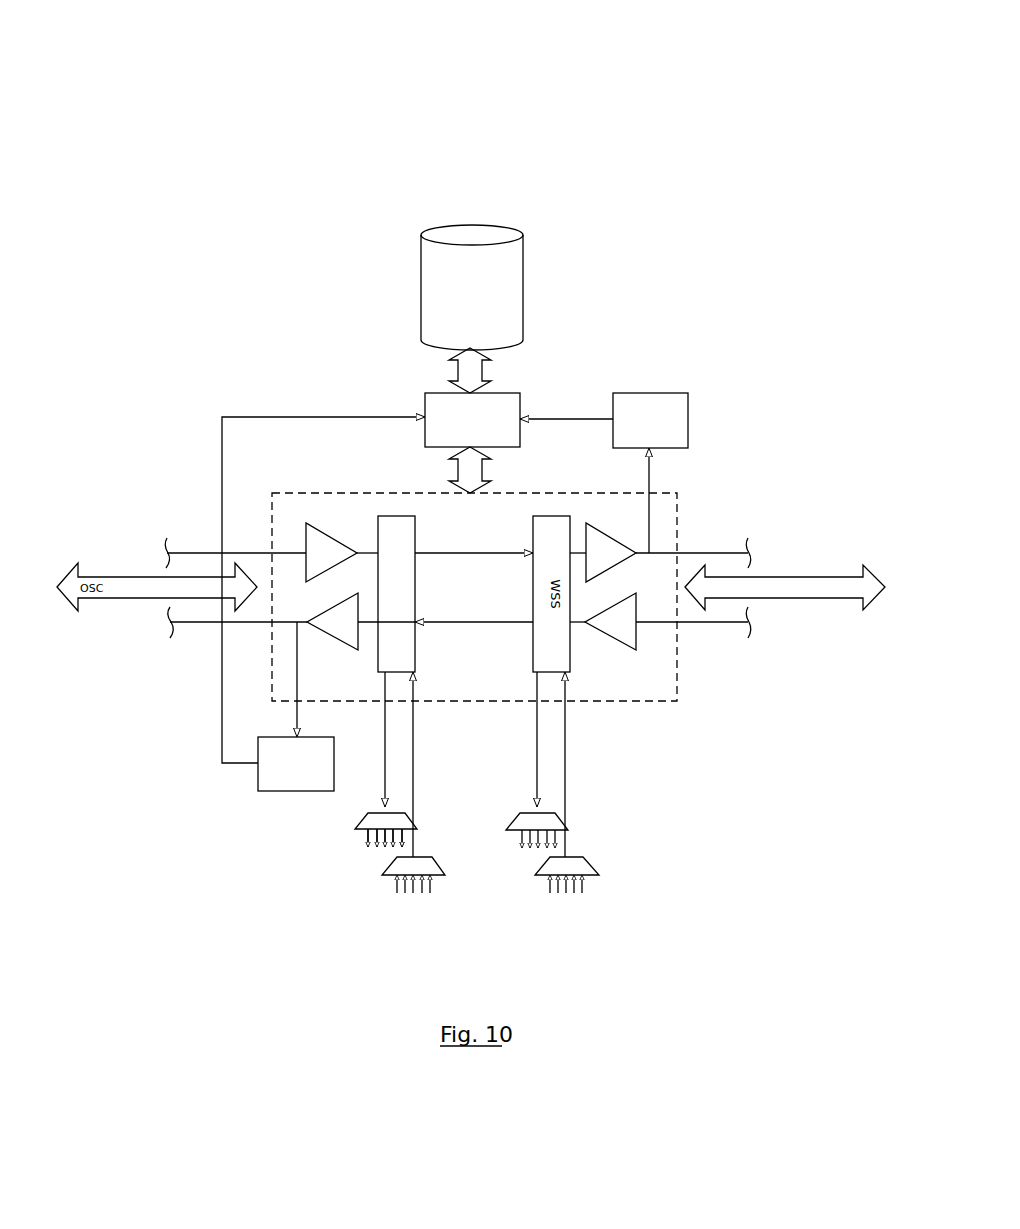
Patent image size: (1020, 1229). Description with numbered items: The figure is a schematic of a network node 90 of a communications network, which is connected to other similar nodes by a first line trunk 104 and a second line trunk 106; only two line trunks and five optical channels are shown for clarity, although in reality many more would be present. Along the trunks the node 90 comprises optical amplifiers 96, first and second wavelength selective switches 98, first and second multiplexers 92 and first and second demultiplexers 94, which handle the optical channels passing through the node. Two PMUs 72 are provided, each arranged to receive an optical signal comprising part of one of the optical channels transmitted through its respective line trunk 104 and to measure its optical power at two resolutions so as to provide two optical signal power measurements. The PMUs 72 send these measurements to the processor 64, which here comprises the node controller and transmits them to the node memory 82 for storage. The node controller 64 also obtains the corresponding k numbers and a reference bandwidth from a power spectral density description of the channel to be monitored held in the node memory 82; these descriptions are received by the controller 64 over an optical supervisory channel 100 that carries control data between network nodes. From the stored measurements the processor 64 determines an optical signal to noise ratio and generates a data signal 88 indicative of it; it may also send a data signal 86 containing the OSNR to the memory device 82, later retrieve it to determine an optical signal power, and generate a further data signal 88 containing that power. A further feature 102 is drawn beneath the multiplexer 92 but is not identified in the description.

The network node 90 is at (582, 62).
The memory device 82 is at (433, 297).
The data signal 86 is at (447, 370).
The processor 64 is at (498, 410).
The PMU 72 is at (678, 412).
The data signal 88 is at (473, 470).
The wavelength selective switch 98 is at (392, 527).
The optical amplifier 96 is at (620, 628).
The second line trunk 106 is at (693, 552).
The optical supervisory channel 100 is at (783, 588).
The first line trunk 104 is at (698, 623).
The demultiplexer 94 is at (527, 823).
The multiplexer 92 is at (580, 867).
The add ports 102 is at (560, 888).